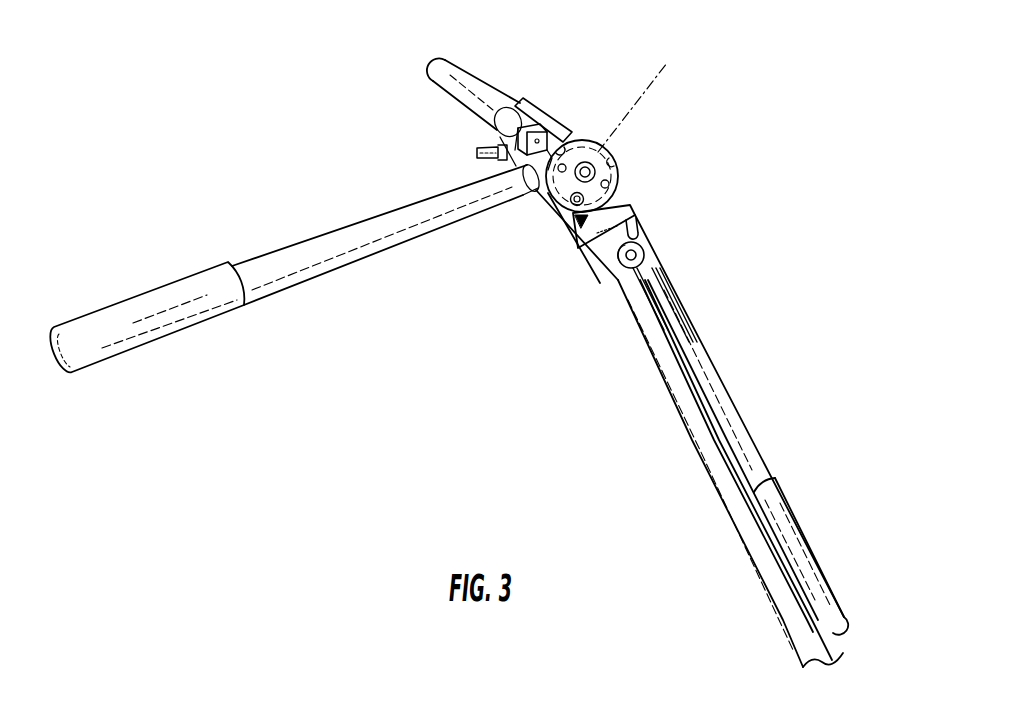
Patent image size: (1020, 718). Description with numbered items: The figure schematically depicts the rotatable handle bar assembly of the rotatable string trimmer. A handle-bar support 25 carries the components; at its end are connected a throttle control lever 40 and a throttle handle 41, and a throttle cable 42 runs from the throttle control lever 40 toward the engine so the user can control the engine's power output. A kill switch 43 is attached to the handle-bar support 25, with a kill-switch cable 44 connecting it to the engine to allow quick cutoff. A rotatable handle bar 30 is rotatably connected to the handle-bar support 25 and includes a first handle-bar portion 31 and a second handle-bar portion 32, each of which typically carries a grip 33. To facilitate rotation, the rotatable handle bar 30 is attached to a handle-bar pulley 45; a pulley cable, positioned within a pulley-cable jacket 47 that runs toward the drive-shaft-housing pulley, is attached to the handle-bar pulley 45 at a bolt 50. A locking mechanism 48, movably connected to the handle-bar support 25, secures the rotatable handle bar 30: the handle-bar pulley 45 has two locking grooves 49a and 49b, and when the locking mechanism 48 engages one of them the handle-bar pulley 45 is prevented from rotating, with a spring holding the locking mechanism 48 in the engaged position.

The handle-bar support 25 is at (708, 432).
The rotatable handle bar 30 is at (440, 201).
The first handle-bar portion 31 is at (298, 253).
The second handle-bar portion 32 is at (733, 408).
The grip 33 is at (133, 310).
The throttle control lever 40 is at (487, 148).
The throttle handle 41 is at (473, 84).
The throttle cable 42 is at (544, 210).
The kill switch 43 is at (641, 250).
The kill-switch cable 44 is at (644, 288).
The handle-bar pulley 45 is at (603, 198).
The pulley-cable jacket 47 is at (674, 318).
The locking mechanism 48 is at (541, 120).
The locking groove 49a is at (568, 140).
The locking groove 49b is at (614, 165).
The bolt 50 is at (575, 203).